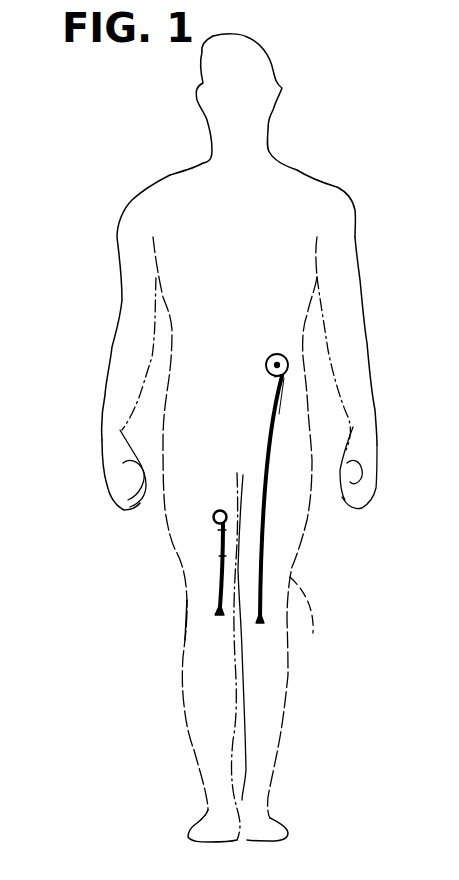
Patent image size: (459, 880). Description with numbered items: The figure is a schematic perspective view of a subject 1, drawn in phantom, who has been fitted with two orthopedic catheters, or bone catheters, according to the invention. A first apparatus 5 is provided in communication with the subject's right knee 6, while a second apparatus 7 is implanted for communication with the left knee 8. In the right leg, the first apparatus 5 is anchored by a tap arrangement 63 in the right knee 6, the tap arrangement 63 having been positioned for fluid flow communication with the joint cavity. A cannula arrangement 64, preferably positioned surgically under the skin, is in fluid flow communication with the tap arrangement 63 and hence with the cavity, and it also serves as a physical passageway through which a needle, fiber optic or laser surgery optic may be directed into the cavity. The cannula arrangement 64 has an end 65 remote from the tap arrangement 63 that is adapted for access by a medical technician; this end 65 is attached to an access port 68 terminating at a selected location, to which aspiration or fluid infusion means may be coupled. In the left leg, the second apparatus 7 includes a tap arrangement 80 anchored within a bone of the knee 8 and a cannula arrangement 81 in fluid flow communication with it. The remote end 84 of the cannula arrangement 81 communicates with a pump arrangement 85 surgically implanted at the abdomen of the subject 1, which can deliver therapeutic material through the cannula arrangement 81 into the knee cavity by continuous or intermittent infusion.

The subject 1 is at (158, 178).
The first apparatus 5 is at (218, 587).
The right knee 6 is at (182, 624).
The second apparatus 7 is at (262, 522).
The left knee 8 is at (310, 618).
The tap arrangement 63 is at (218, 614).
The cannula arrangement 64 is at (223, 556).
The end 65 is at (221, 531).
The access port 68 is at (221, 510).
The tap arrangement 80 is at (259, 624).
The cannula arrangement 81 is at (277, 414).
The remote end 84 is at (280, 378).
The pump arrangement 85 is at (267, 355).